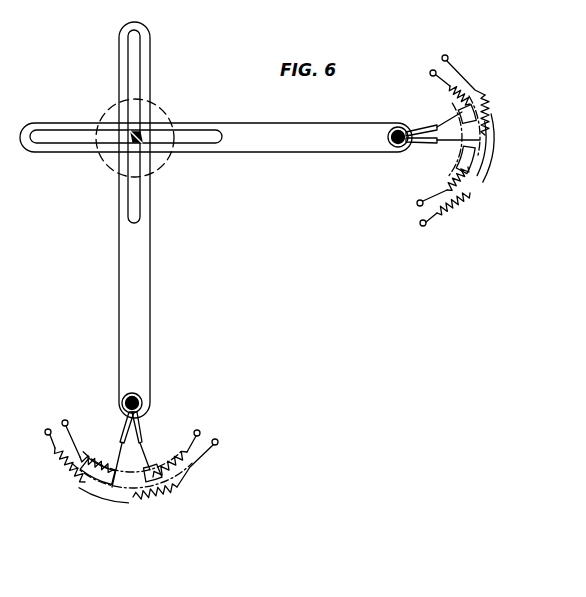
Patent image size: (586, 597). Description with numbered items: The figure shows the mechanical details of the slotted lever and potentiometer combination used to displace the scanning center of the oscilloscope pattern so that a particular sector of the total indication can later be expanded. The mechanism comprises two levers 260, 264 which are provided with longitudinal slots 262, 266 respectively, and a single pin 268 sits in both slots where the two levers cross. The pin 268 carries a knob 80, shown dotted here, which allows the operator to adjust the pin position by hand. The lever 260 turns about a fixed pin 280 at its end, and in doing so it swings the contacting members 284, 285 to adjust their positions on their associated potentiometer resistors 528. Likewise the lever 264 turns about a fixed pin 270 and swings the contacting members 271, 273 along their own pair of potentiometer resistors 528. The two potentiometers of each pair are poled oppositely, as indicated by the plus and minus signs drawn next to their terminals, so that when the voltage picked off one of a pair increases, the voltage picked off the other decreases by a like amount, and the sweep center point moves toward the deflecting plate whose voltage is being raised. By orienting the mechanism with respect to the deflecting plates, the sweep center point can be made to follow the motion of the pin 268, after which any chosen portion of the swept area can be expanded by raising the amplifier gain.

The knob 80 is at (110, 165).
The lever 260 is at (262, 123).
The longitudinal slot 262 is at (190, 145).
The lever 264 is at (150, 320).
The longitudinal slot 266 is at (140, 212).
The pin 268 is at (160, 115).
The fixed pin 270 is at (140, 398).
The contacting member 271 is at (118, 450).
The contacting member 273 is at (145, 448).
The fixed pin 280 is at (392, 128).
The contacting member 284 is at (442, 122).
The contacting member 285 is at (442, 146).
The potentiometer resistors 528 is at (462, 93).